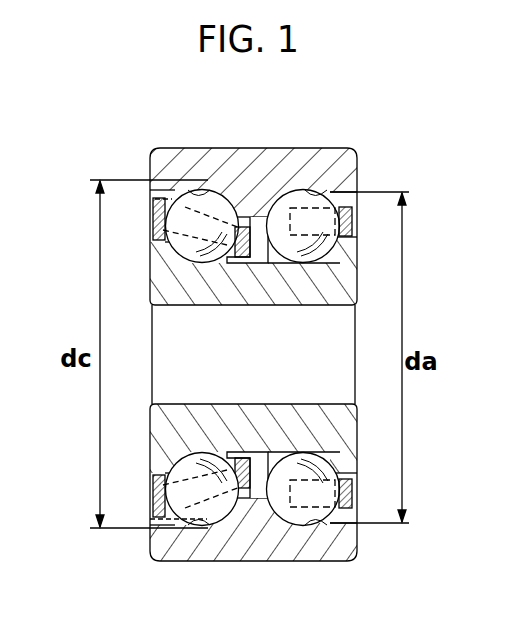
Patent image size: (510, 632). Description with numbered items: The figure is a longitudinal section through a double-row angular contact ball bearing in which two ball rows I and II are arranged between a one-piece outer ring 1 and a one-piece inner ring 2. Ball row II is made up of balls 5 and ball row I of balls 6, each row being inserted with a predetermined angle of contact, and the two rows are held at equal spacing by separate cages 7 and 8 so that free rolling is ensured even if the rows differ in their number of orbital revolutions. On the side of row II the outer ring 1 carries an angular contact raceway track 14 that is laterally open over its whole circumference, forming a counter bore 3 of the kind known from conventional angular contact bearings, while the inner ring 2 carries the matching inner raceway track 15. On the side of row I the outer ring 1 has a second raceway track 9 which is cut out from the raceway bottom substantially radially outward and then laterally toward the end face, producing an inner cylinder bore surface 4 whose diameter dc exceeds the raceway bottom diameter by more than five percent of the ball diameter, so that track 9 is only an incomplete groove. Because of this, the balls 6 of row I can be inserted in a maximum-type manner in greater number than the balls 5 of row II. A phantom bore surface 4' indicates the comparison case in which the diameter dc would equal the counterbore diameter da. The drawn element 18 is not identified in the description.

The outer ring 1 is at (255, 180).
The inner ring 2 is at (350, 268).
The counter bore 3 is at (360, 190).
The inner cylinder bore surface 4 is at (110, 217).
The bore surface (phantom line) 4' is at (111, 239).
The balls 5 is at (296, 195).
The balls 6 is at (195, 220).
The cage 7 is at (347, 500).
The cage 8 is at (153, 548).
The raceway track 9 is at (204, 205).
The angular contact raceway track 14 is at (316, 193).
The inner ring raceway track 15 is at (352, 486).
The cage ring 18 is at (150, 478).
The ball row I is at (204, 500).
The ball row II is at (297, 500).